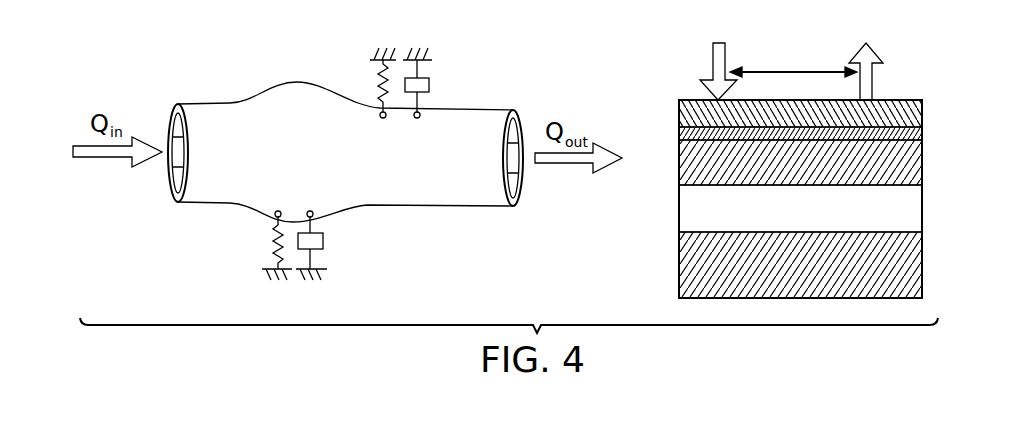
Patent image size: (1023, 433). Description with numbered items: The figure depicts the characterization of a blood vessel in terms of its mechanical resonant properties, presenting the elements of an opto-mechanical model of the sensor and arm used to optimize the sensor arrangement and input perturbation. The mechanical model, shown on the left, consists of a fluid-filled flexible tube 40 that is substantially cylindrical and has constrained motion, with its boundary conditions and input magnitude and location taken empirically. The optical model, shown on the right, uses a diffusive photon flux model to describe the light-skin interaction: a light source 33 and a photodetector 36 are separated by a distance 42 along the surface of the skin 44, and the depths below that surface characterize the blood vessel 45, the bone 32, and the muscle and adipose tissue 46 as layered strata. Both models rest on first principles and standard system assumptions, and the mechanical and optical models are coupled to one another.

The fluid-filled flexible tube 40 is at (405, 205).
The skin 44 is at (923, 115).
The blood vessel 45 is at (923, 139).
The bone 32 is at (923, 212).
The muscle and adipose tissue 46 is at (923, 267).
The light source 33 is at (728, 48).
The photodetector 36 is at (873, 75).
The distance 42 is at (778, 68).